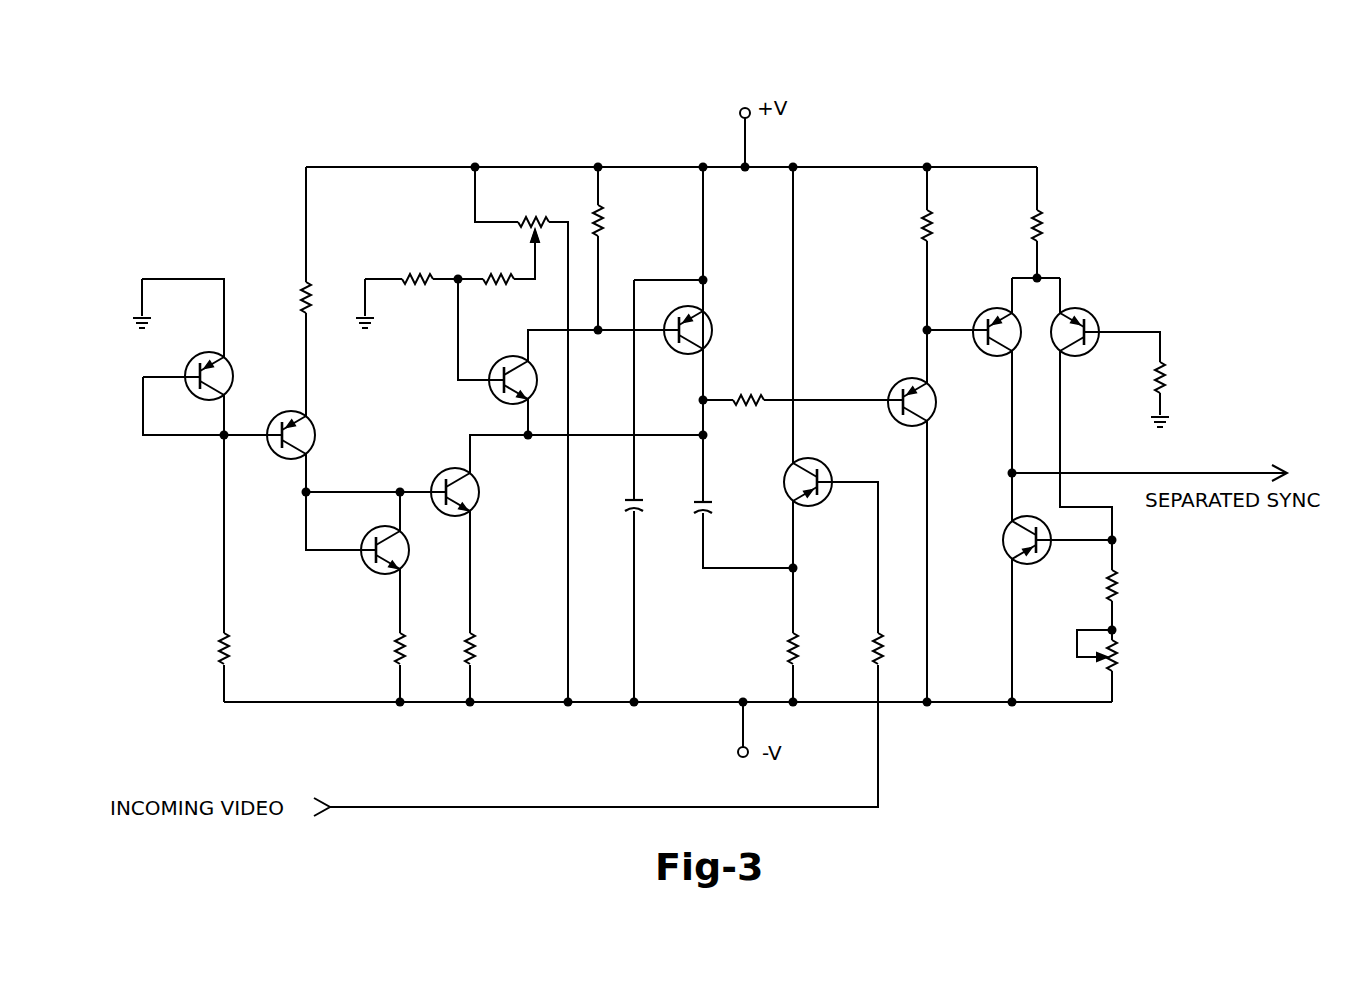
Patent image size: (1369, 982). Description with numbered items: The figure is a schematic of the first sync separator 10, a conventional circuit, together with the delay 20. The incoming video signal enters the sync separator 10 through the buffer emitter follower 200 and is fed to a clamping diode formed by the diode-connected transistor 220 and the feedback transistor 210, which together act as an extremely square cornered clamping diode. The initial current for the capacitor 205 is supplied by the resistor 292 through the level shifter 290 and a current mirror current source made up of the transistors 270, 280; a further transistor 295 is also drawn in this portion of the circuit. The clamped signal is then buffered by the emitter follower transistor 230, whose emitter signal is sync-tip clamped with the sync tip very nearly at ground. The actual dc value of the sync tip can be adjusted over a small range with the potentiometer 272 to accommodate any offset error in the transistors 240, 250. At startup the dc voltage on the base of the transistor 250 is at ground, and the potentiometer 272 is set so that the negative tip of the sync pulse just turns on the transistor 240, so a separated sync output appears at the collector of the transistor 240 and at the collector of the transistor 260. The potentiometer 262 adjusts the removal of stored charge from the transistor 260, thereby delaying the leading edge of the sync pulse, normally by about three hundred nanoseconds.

The sync separator 10 is at (935, 108).
The delay 20 is at (1215, 581).
The buffer emitter follower 200 is at (826, 464).
The capacitor 205 is at (710, 497).
The feedback transistor 210 is at (711, 322).
The diode-connected transistor 220 is at (492, 398).
The emitter follower transistor 230 is at (893, 385).
The transistor 240 is at (1001, 309).
The transistor 250 is at (1092, 313).
The transistor 260 is at (1008, 554).
The potentiometer 262 is at (1125, 658).
The transistor 270 is at (480, 503).
The potentiometer 272 is at (545, 210).
The transistor 280 is at (372, 575).
The level shifter 290 is at (315, 440).
The resistor 292 is at (300, 297).
The transistor 295 is at (233, 362).